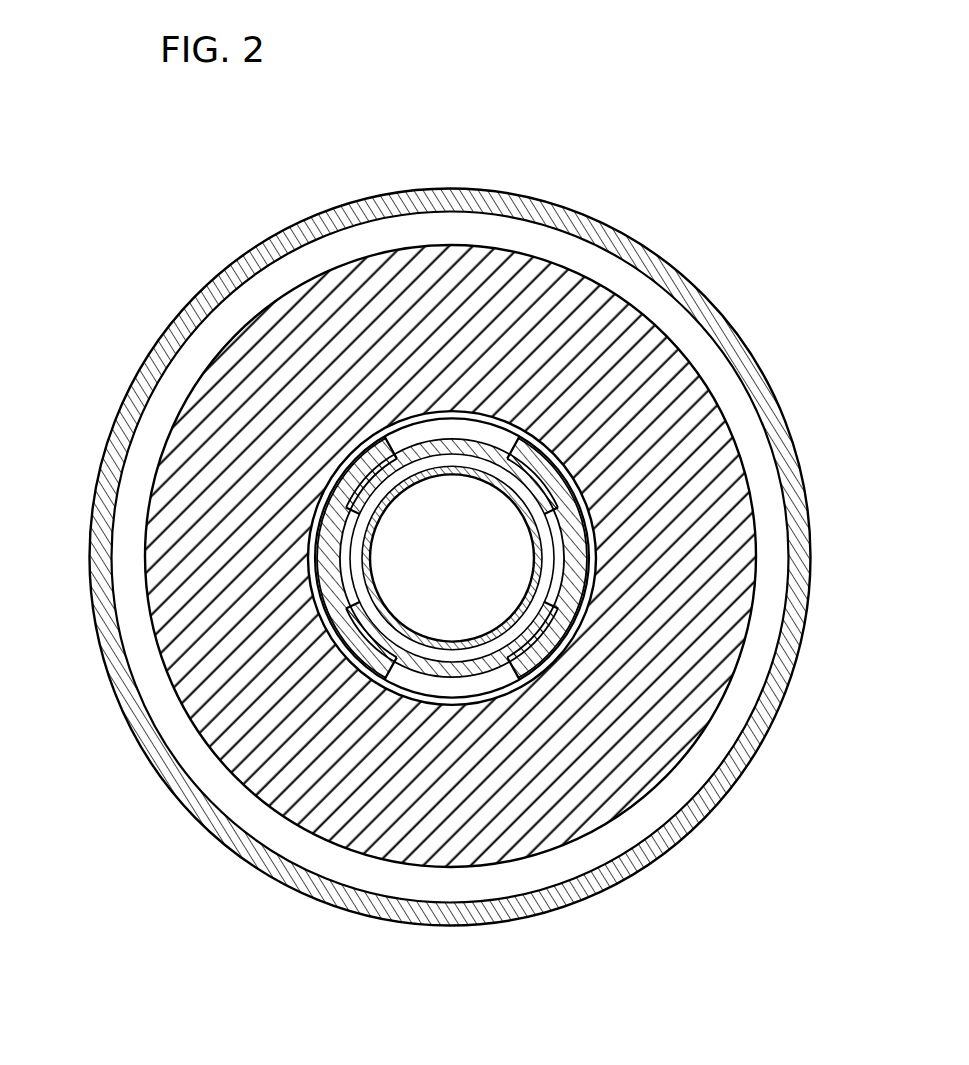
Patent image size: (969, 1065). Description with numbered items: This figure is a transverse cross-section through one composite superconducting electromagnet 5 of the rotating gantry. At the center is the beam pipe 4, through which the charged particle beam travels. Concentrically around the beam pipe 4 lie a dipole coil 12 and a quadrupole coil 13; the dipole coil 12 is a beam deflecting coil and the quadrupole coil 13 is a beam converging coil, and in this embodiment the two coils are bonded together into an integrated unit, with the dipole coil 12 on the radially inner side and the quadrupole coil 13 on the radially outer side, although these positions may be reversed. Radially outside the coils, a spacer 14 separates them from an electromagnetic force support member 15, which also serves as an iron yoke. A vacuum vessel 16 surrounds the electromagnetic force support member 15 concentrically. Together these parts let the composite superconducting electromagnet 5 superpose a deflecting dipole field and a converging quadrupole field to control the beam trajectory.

The beam pipe 4 is at (373, 581).
The composite superconducting electromagnet 5 is at (453, 557).
The dipole coil 12 is at (578, 582).
The quadrupole coil 13 is at (483, 658).
The spacer 14 is at (520, 437).
The electromagnetic force support member 15 is at (180, 527).
The vacuum vessel 16 is at (118, 683).